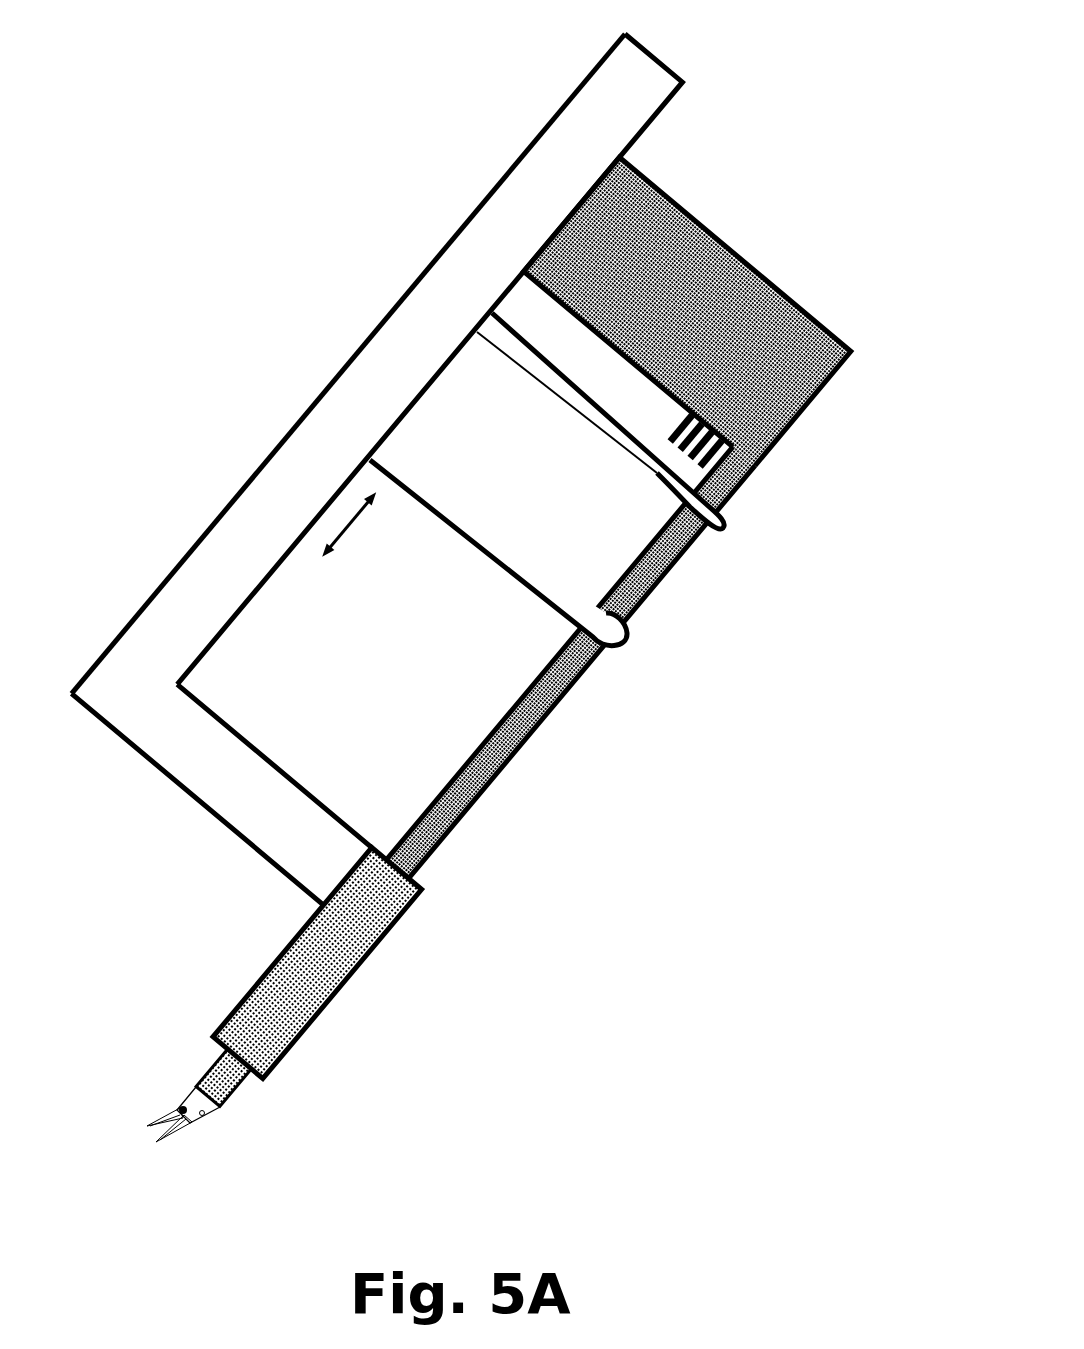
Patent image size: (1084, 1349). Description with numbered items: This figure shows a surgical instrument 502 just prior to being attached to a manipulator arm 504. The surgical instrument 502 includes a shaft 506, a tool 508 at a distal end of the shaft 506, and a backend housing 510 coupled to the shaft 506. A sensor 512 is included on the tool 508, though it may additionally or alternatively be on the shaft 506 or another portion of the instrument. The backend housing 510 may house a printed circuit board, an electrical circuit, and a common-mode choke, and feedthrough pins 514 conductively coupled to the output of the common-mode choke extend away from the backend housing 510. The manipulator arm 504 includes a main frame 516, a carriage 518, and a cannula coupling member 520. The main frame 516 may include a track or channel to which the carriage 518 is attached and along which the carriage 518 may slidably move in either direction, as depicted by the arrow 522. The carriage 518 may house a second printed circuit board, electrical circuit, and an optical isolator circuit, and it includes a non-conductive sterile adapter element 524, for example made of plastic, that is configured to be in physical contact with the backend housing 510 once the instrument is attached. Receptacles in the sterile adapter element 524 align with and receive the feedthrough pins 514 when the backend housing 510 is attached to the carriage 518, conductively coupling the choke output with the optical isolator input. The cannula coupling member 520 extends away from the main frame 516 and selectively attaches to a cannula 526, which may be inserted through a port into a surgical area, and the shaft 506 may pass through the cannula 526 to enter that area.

The surgical instrument 502 is at (864, 346).
The manipulator arm 504 is at (672, 58).
The shaft 506 is at (538, 732).
The tool 508 is at (188, 1122).
The backend housing 510 is at (743, 283).
The sensor 512 is at (180, 1106).
The feedthrough pins 514 is at (662, 468).
The main frame 516 is at (500, 217).
The carriage 518 is at (508, 553).
The cannula coupling member 520 is at (226, 806).
The arrow 522 is at (347, 533).
The sterile adapter element 524 is at (581, 401).
The cannula 526 is at (335, 975).